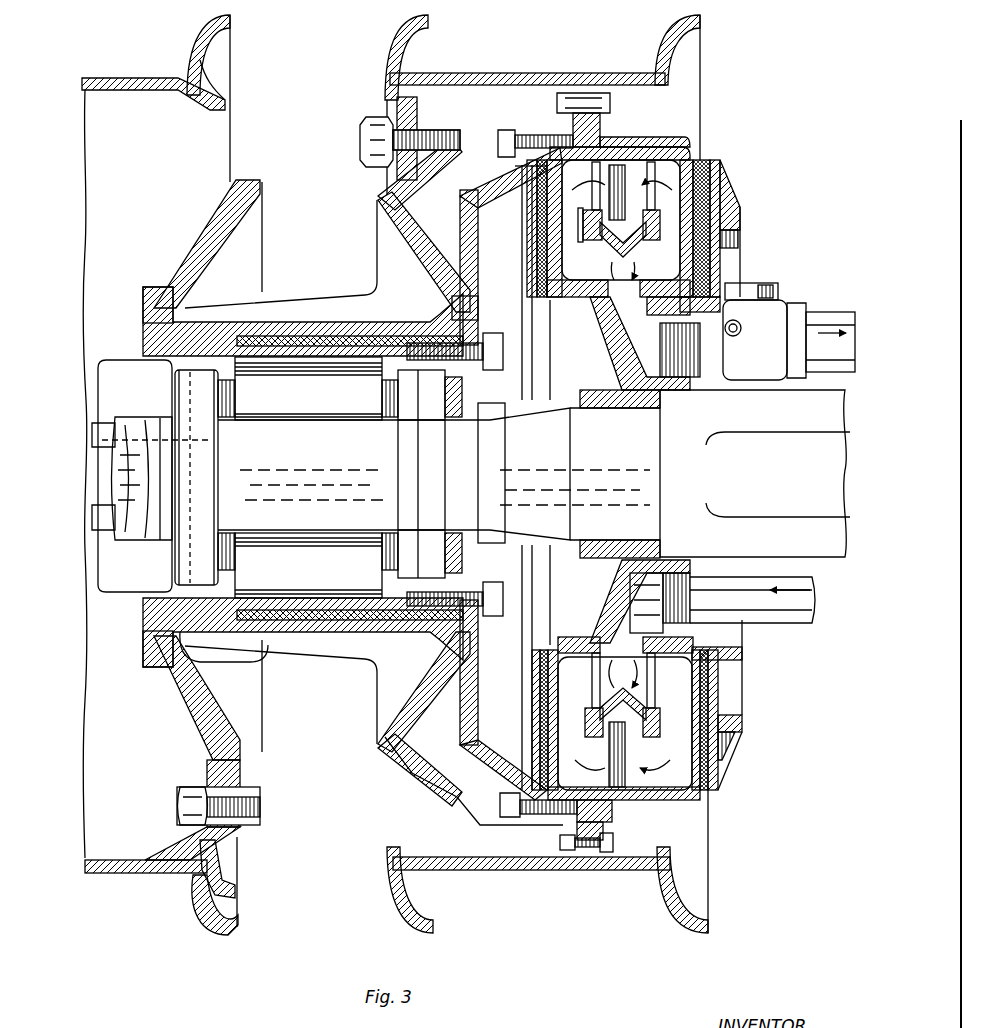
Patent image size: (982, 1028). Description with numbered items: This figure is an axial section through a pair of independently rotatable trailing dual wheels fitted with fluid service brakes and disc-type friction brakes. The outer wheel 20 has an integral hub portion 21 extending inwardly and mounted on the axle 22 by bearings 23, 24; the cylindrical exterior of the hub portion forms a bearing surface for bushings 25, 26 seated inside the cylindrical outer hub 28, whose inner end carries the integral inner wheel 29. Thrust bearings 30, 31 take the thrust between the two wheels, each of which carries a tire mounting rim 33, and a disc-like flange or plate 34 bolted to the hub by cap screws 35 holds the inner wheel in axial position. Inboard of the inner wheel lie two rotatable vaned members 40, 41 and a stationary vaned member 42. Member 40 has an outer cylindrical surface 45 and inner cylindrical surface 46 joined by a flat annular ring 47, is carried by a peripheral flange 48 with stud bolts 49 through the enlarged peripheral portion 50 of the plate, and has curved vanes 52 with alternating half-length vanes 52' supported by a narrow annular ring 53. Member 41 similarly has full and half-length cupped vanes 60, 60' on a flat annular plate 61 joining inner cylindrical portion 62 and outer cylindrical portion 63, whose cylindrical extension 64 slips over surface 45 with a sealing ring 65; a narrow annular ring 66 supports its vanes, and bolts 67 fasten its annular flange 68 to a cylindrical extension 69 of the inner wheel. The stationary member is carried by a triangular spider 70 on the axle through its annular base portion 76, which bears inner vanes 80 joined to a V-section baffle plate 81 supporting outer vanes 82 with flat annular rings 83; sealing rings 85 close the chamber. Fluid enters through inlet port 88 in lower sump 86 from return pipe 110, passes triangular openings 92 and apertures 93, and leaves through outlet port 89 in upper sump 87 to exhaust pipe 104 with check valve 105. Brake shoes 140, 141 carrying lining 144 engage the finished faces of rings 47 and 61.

The tire mounting rim 33 is at (118, 78).
The outer wheel 20 is at (216, 232).
The thrust bearing 30 is at (160, 300).
The cylindrical outer hub 28 is at (310, 322).
The bushing 25 is at (238, 320).
The bushing 26 is at (382, 340).
The thrust bearing 31 is at (455, 303).
The inner wheel 29 is at (382, 226).
The flange or plate 34 is at (462, 229).
The cap screws 35 is at (493, 338).
The hub portion 21 is at (282, 360).
The axle 22 is at (311, 428).
The bearing 23 is at (208, 555).
The bearing 24 is at (412, 548).
The rotatable vaned member 41 is at (672, 262).
The outer cylindrical surface 45 is at (625, 135).
The outer vanes 82 is at (700, 178).
The flat annular rings 83 is at (698, 212).
The frictional brake lining 144 is at (702, 156).
The brake shoe 140 is at (722, 165).
The half-length cupped vanes 60' is at (751, 705).
The full-length cupped vanes 60 is at (730, 720).
The flat annular plate 61 is at (712, 690).
The narrow annular ring 66 is at (708, 708).
The inner cylindrical portion 62 is at (720, 651).
The outer coaxial cylindrical portion 63 is at (683, 800).
The cylindrical extension 64 is at (612, 808).
The sealing ring 65 is at (605, 818).
The cylindrical extension 69 is at (565, 853).
The bolts 67 is at (578, 855).
The annular flange 68 is at (604, 855).
The stationary vaned member 42 is at (627, 160).
The apertures 93 is at (648, 712).
The rotatable vaned member 40 is at (568, 259).
The curved vanes 52 is at (568, 473).
The half-length vanes 52' is at (513, 228).
The inner coaxial cylindrical surface 46 is at (540, 296).
The flat annular ring 47 is at (566, 182).
The narrow annular ring 53 is at (578, 218).
The enlarged peripheral portion 50 is at (547, 168).
The stud bolts 49 is at (527, 137).
The peripheral flange 48 is at (565, 128).
The sealing rings 85 is at (596, 297).
The annular base portion 76 is at (575, 312).
The upper fluid sump 87 is at (632, 360).
The lower fluid sump 86 is at (645, 579).
The triangular spider 70 is at (597, 392).
The outlet port 89 is at (680, 380).
The inlet port 88 is at (673, 575).
The triangular openings 92 is at (633, 595).
The return pipe 110 is at (810, 602).
The check valve 105 is at (772, 327).
The fluid exhaust pipe 104 is at (831, 320).
The inner vanes 80 is at (558, 717).
The brake shoe 141 is at (538, 757).
The baffle plate 81 is at (622, 715).